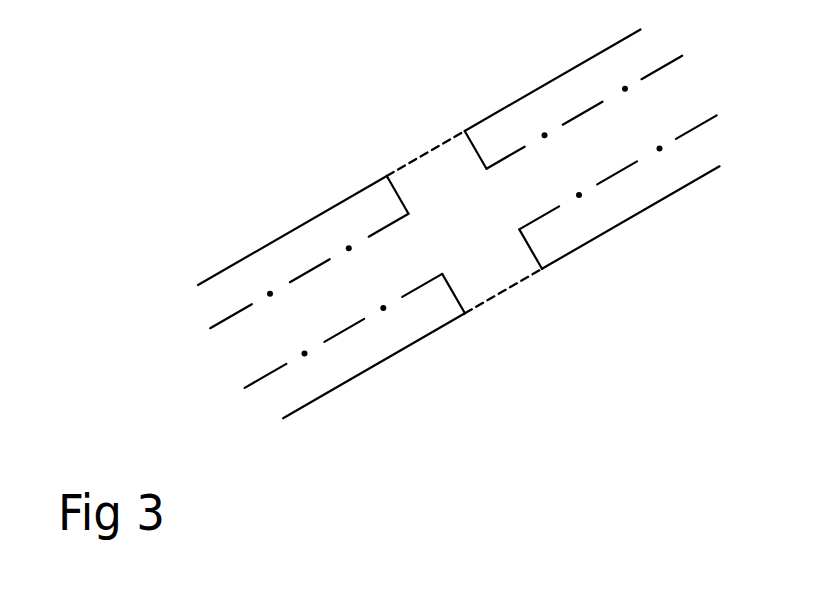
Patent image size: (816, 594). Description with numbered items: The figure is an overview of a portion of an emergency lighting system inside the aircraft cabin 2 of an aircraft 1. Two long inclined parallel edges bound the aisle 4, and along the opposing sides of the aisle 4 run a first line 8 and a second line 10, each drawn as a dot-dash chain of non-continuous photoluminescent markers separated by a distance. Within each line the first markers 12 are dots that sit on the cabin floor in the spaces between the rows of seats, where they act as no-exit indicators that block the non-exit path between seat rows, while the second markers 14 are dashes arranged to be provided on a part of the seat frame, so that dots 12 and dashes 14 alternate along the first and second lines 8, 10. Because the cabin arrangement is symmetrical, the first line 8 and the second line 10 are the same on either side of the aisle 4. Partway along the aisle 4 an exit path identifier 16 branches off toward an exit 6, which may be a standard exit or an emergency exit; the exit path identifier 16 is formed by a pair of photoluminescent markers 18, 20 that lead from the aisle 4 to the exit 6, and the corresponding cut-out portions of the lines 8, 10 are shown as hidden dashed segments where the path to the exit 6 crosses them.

The aircraft 1 is at (266, 226).
The aircraft cabin 2 is at (377, 228).
The aisle 4 is at (656, 132).
The exit 6 is at (537, 294).
The first line 8 is at (224, 299).
The second line 10 is at (279, 382).
The first markers 12 is at (390, 312).
The second markers 14 is at (561, 218).
The exit path identifier 16 is at (465, 301).
The marker 18 is at (393, 177).
The marker 20 is at (448, 136).